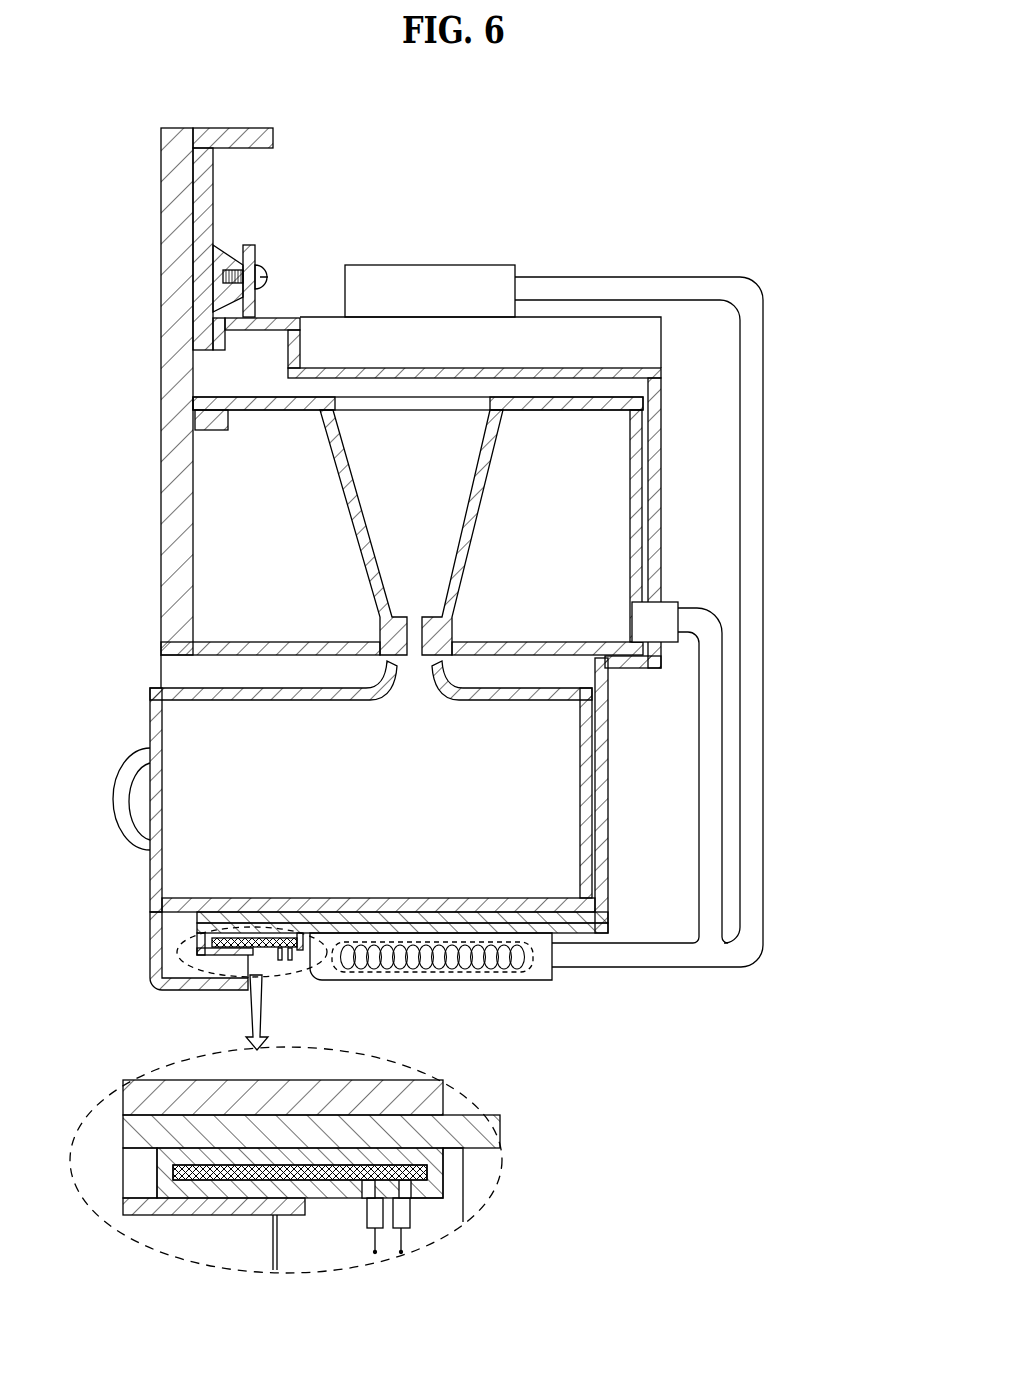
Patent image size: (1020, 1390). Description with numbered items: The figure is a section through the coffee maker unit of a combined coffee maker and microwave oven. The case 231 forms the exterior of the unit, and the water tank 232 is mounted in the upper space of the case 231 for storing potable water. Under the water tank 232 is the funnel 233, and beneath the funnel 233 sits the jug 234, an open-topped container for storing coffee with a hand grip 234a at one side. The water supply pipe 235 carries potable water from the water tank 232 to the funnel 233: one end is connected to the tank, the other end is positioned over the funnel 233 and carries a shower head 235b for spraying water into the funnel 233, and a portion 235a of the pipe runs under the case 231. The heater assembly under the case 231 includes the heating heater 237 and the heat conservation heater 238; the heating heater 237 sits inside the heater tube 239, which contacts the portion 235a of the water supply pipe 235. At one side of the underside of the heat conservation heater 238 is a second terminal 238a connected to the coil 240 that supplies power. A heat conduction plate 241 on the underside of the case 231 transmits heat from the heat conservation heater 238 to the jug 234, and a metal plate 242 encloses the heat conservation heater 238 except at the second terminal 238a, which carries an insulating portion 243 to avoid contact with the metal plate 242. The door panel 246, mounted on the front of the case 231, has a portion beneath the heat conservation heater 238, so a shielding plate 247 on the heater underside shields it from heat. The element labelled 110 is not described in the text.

The bottom plate 110 is at (443, 1095).
The case 231 is at (668, 498).
The water tank 232 is at (640, 557).
The funnel 233 is at (478, 507).
The jug 234 is at (146, 721).
The hand grip 234a is at (114, 805).
The water supply pipe 235 is at (753, 592).
The portion of the water supply pipe 235a is at (527, 981).
The shower head 235b is at (451, 261).
The heating heater 237 is at (449, 981).
The heat conservation heater 238 is at (327, 1173).
The second terminal 238a is at (433, 1198).
The heater tube 239 is at (375, 981).
The coil 240 is at (376, 1254).
The heat conduction plate 241 is at (477, 1134).
The metal plate 242 is at (187, 1200).
The insulating portion 243 is at (407, 1212).
The door panel 246 is at (233, 130).
The shielding plate 247 is at (155, 1207).